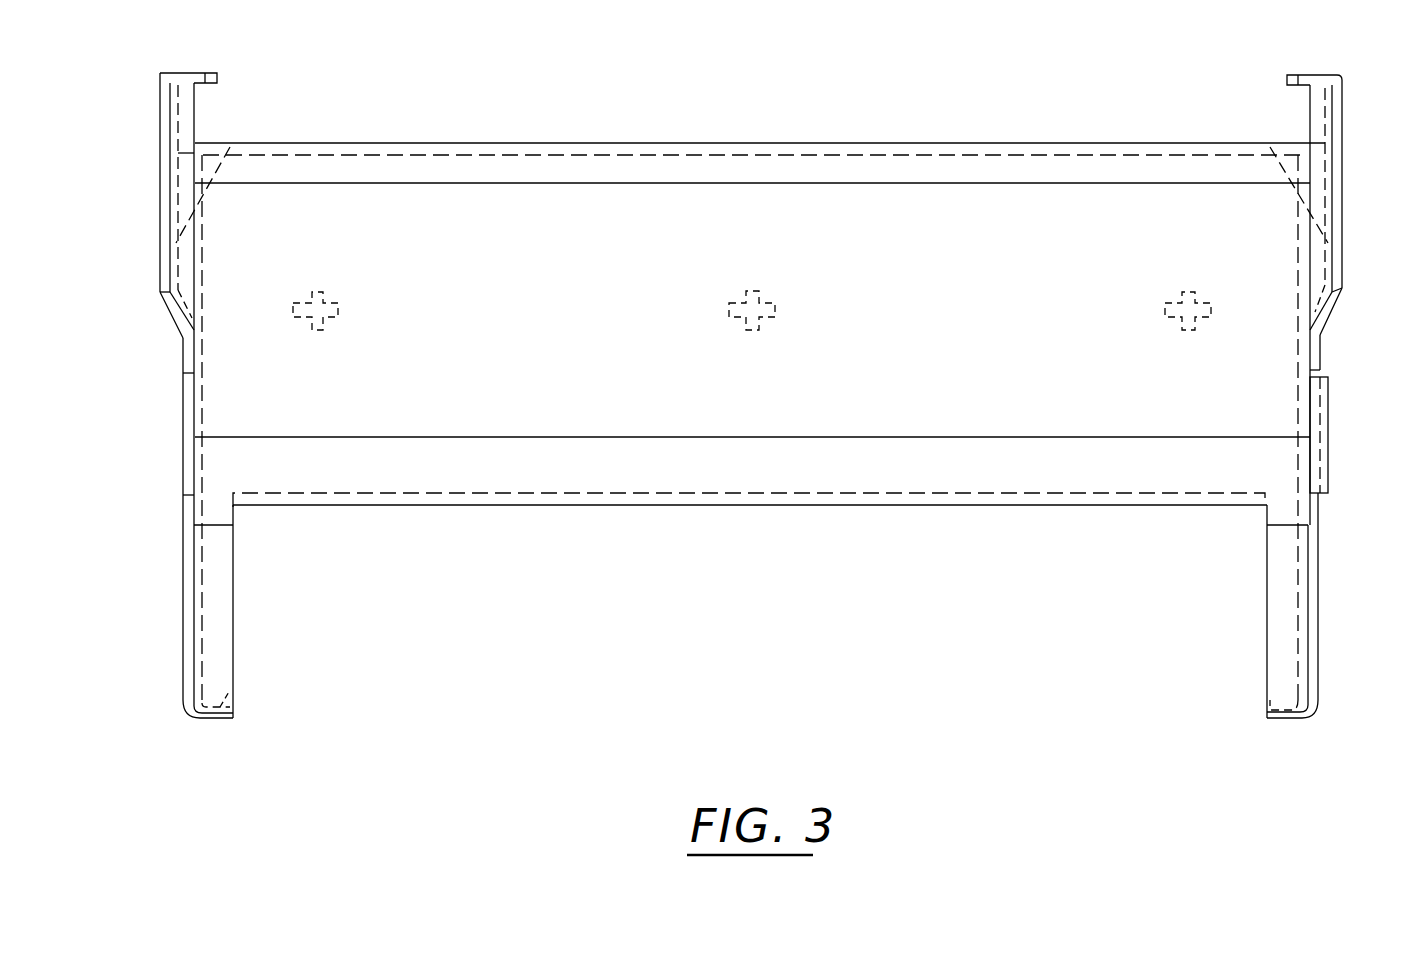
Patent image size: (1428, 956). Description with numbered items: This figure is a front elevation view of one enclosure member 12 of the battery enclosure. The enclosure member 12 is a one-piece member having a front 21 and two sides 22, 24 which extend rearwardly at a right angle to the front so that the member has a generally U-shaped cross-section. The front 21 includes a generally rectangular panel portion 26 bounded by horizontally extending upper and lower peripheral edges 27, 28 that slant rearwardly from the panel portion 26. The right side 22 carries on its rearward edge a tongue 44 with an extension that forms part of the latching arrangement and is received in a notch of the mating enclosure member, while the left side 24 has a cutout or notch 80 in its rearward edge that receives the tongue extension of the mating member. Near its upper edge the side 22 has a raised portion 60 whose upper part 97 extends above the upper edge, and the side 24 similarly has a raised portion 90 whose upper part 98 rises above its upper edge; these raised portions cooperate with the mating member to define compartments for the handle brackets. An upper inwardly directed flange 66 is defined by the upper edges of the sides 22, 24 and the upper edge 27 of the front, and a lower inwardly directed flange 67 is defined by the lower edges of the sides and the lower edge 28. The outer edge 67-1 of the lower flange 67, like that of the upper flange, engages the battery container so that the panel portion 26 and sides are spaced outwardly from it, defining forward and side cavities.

The enclosure member 12 is at (875, 647).
The front 21 is at (966, 274).
The side 22 is at (1343, 277).
The side 24 is at (158, 297).
The panel portion 26 is at (668, 213).
The upper peripheral edge 27 is at (927, 170).
The lower peripheral edge 28 is at (613, 498).
The tongue 44 is at (1328, 415).
The raised portion 60 is at (1343, 137).
The upper inwardly directed flange 66 is at (214, 146).
The lower inwardly directed flange 67 is at (230, 690).
The outer edge 67-1 is at (233, 713).
The notch 80 is at (194, 415).
The raised portion 90 is at (160, 133).
The upper part 97 is at (1320, 75).
The upper part 98 is at (192, 73).